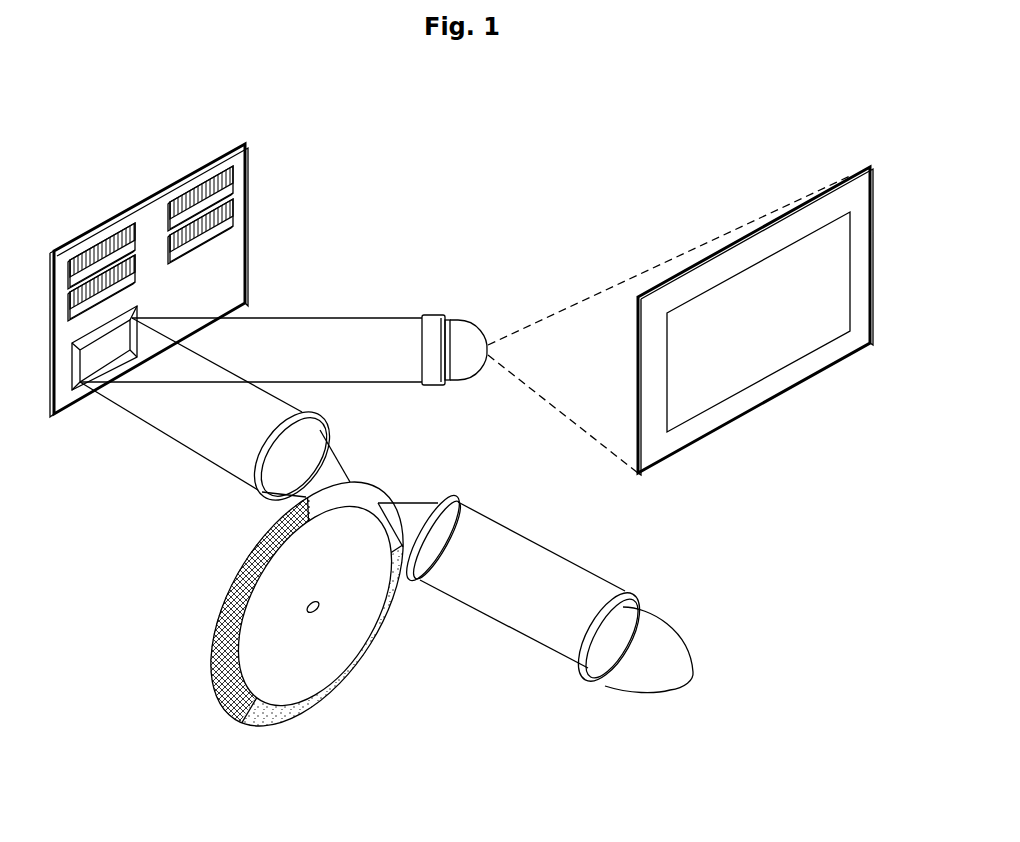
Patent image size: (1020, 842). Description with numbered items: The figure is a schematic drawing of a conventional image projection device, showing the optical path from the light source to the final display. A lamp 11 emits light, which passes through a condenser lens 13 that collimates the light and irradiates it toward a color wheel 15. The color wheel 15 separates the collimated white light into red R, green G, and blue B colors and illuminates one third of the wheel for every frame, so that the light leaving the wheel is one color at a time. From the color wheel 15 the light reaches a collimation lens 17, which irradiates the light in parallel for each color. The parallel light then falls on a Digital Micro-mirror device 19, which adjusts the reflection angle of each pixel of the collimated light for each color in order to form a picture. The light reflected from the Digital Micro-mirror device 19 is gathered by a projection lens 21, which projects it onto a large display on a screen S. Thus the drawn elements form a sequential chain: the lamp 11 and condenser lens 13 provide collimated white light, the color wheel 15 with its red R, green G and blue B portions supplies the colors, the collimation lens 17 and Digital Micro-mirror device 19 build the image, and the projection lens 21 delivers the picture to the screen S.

The lamp 11 is at (663, 640).
The condenser lens 13 is at (458, 497).
The color wheel 15 is at (306, 603).
The collimation lens 17 is at (262, 492).
The Digital Micro-mirror device 19 is at (76, 390).
The projection lens 21 is at (433, 322).
The red color R is at (332, 700).
The green color G is at (218, 693).
The blue color B is at (373, 488).
The screen S is at (745, 255).